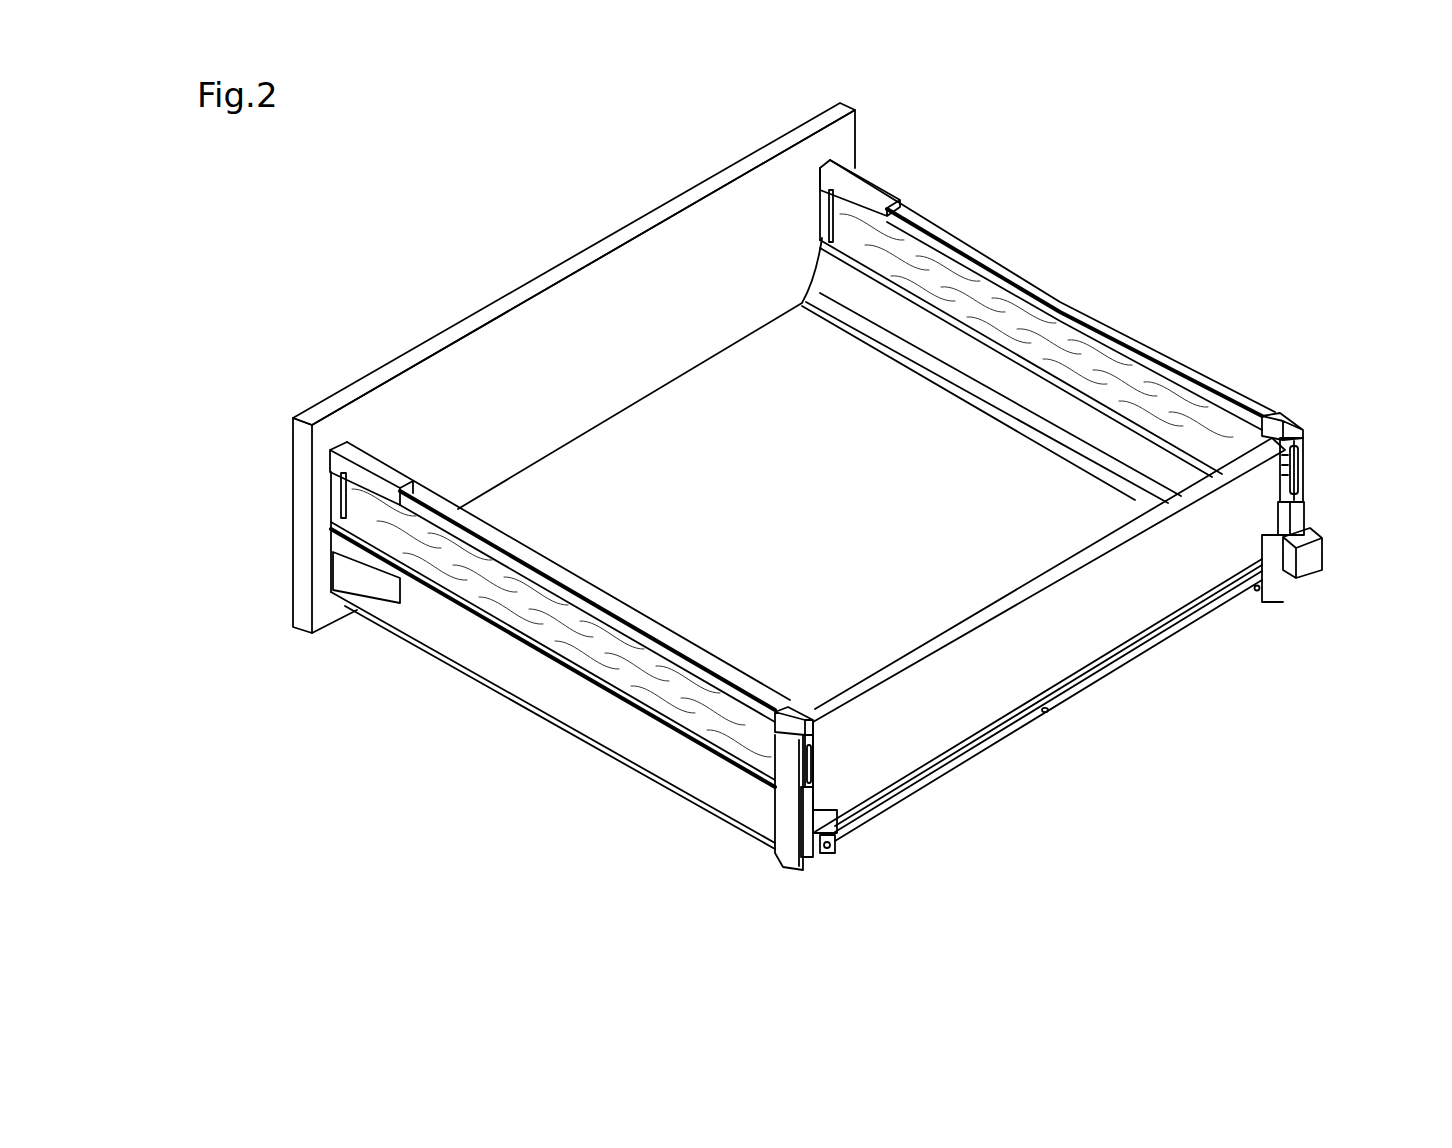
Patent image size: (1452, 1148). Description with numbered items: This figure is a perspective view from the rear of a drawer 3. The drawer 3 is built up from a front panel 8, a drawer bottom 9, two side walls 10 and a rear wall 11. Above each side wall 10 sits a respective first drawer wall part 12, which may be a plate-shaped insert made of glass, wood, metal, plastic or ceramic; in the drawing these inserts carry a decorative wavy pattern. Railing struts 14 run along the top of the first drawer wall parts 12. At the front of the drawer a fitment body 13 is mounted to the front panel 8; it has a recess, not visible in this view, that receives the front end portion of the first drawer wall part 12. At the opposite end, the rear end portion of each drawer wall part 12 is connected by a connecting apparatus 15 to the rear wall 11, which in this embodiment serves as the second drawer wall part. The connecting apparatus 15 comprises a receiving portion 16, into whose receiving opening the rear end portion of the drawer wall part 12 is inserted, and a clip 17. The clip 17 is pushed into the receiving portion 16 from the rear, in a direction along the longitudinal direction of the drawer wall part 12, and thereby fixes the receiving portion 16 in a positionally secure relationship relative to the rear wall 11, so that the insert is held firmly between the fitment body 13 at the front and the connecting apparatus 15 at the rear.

The drawer 3 is at (1133, 741).
The front panel 8 is at (561, 272).
The drawer bottom 9 is at (781, 516).
The side walls 10 is at (835, 278).
The rear wall 11 is at (1115, 627).
The first drawer wall part 12 is at (837, 238).
The fitment body 13 is at (828, 200).
The railing struts 14 is at (1058, 300).
The connecting apparatus 15 is at (1306, 472).
The receiving portion 16 is at (1303, 452).
The clip 17 is at (1297, 480).